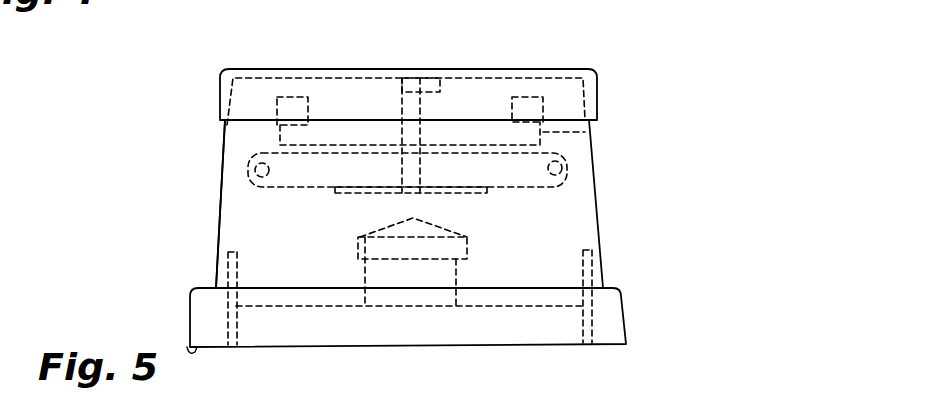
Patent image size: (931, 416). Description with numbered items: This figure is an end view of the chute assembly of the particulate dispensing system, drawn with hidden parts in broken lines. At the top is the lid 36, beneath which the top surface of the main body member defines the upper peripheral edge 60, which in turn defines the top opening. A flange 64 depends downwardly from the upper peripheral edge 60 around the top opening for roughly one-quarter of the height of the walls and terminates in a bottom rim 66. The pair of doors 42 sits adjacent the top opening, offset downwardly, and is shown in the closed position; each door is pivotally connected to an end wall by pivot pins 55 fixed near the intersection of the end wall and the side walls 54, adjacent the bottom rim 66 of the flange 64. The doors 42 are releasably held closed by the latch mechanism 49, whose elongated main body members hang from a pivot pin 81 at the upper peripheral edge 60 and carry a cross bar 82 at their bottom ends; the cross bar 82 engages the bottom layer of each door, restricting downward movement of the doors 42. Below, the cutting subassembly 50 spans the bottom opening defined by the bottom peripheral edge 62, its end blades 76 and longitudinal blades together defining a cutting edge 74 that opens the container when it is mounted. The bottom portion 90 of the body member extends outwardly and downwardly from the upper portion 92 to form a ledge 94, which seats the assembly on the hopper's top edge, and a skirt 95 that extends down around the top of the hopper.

The lid 36 is at (574, 68).
The doors 42 is at (497, 143).
The latch mechanism 49 is at (400, 130).
The cutting subassembly 50 is at (458, 270).
The side walls 54 is at (220, 180).
The pivot pins 55 is at (565, 163).
The upper peripheral edge 60 is at (230, 70).
The bottom peripheral edge 62 is at (187, 350).
The flange 64 is at (255, 175).
The bottom rim 66 is at (318, 148).
The cutting edge 74 is at (415, 218).
The end blades 76 is at (418, 108).
The pivot pin 81 is at (387, 84).
The cross bar 82 is at (487, 189).
The bottom portion 90 is at (193, 288).
The upper portion 92 is at (222, 142).
The ledge 94 is at (613, 287).
The skirt 95 is at (620, 317).